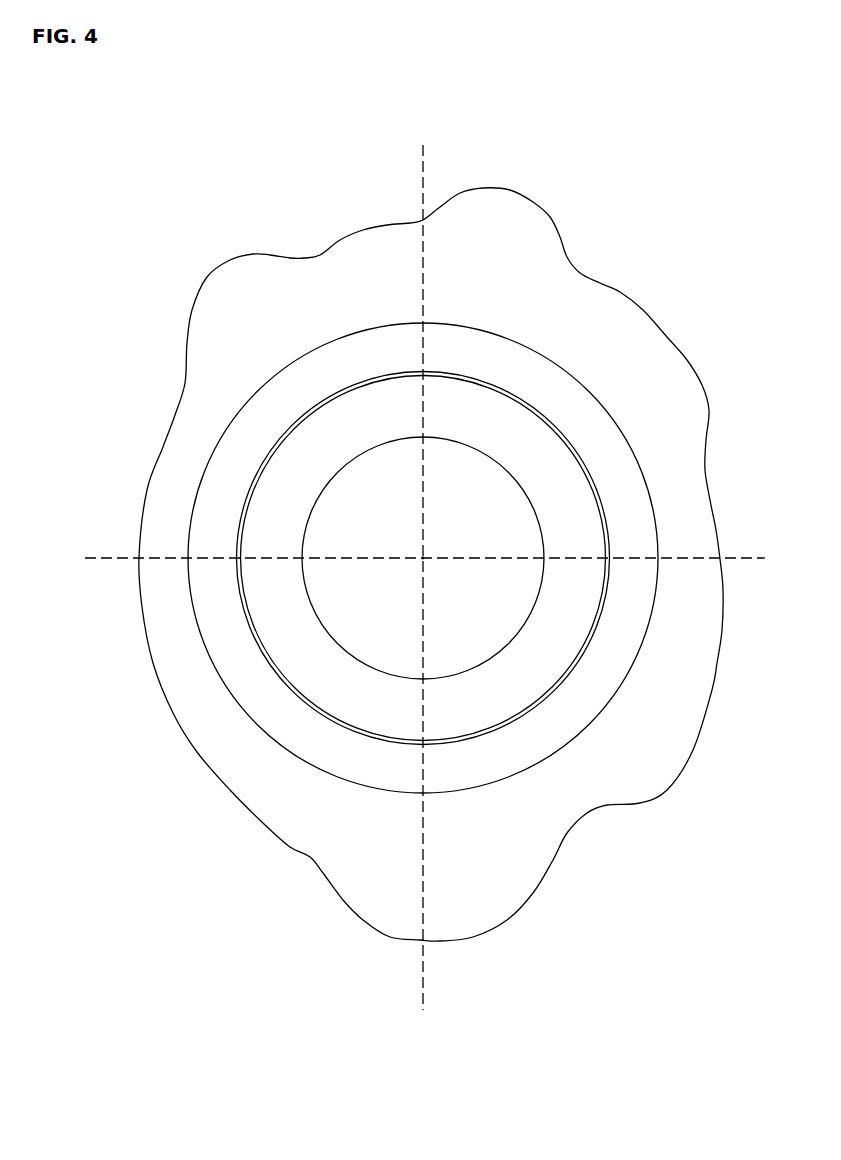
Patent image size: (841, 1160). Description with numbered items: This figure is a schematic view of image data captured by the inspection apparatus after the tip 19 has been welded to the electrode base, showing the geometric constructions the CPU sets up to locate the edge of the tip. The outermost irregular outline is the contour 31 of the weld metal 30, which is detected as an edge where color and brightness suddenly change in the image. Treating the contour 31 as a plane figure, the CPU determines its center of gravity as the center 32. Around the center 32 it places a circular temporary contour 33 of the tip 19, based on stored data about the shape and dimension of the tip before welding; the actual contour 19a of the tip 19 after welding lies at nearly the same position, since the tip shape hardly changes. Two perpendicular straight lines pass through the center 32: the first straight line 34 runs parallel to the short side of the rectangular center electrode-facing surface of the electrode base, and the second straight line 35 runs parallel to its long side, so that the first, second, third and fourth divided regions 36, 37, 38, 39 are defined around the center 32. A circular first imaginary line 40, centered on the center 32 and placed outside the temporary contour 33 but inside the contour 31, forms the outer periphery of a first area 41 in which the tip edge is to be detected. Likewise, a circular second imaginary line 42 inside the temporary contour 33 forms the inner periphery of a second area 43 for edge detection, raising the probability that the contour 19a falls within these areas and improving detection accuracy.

The tip 19 is at (423, 547).
The contour of the tip 19a is at (423, 547).
The weld metal 30 is at (445, 564).
The contour of the weld metal 31 is at (620, 290).
The center 32 is at (425, 558).
The temporary contour 33 is at (547, 428).
The first straight line 34 is at (745, 556).
The second straight line 35 is at (425, 160).
The first divided region 36 is at (615, 210).
The second divided region 37 is at (260, 210).
The third divided region 38 is at (260, 891).
The fourth divided region 39 is at (617, 893).
The first imaginary line 40 is at (622, 685).
The first area 41 is at (479, 764).
The second imaginary line 42 is at (314, 614).
The second area 43 is at (361, 690).